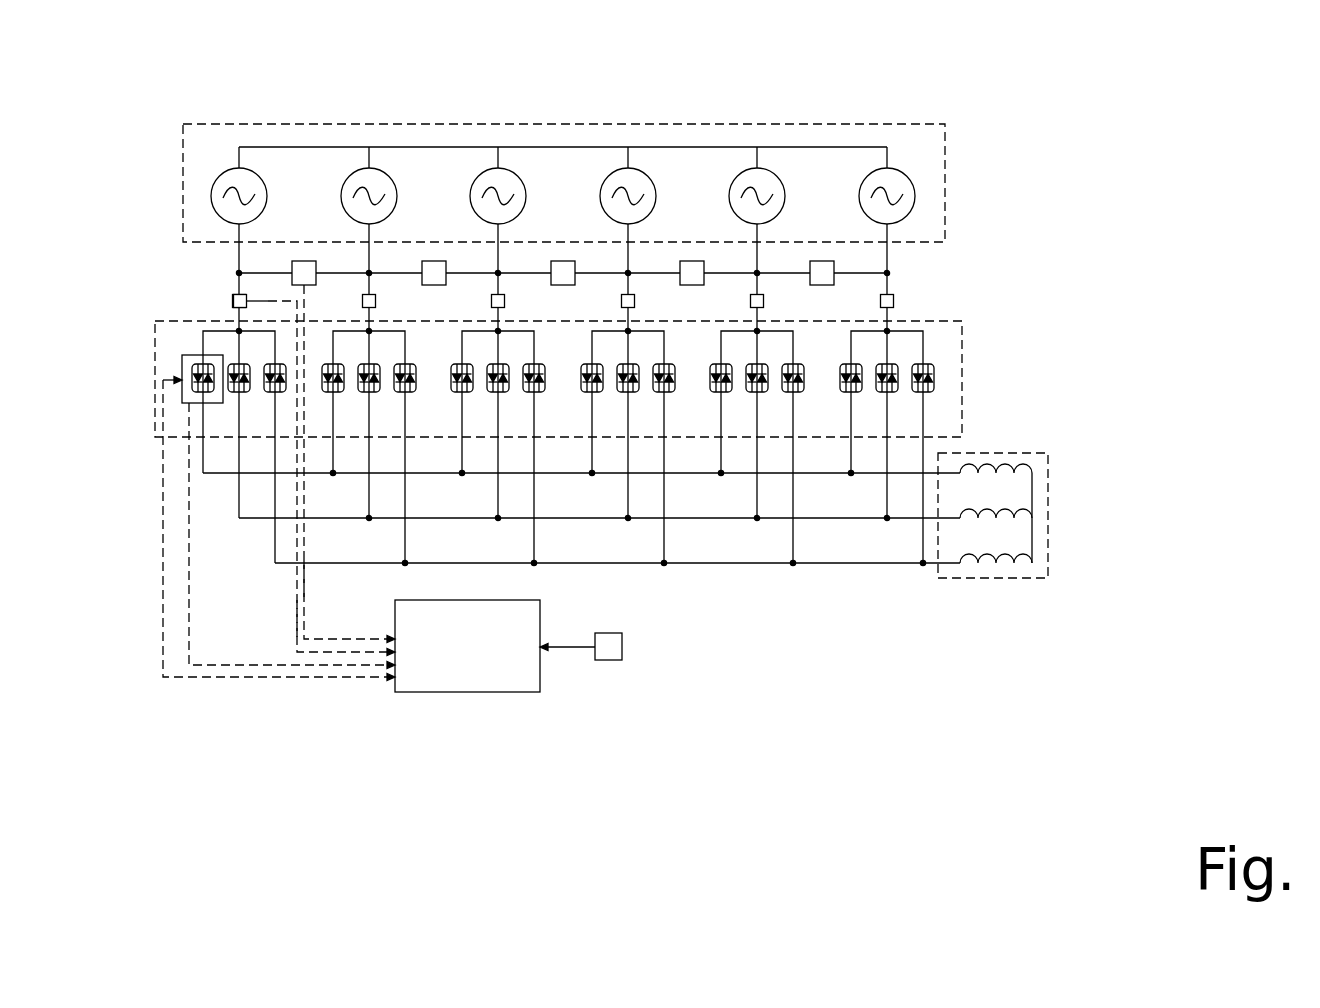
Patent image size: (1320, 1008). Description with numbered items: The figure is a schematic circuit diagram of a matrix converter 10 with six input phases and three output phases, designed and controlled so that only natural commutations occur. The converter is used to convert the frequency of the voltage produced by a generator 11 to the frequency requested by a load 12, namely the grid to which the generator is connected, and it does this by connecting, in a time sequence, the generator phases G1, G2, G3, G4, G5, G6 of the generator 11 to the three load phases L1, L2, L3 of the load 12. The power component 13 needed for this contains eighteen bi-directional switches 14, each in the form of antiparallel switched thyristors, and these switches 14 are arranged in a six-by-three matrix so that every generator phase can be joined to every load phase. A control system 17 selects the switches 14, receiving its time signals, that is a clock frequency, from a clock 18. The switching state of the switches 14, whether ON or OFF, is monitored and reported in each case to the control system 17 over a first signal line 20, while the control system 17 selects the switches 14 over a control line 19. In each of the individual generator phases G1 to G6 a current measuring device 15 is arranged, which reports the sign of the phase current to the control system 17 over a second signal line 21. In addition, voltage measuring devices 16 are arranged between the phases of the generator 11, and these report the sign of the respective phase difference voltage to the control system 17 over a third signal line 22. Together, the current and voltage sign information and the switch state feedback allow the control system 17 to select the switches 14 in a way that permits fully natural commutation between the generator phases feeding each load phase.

The matrix converter 10 is at (998, 298).
The generator 11 is at (616, 315).
The load 12 is at (658, 537).
The power component 13 is at (965, 375).
The bi-directional switch 14 is at (190, 355).
The current measuring device 15 is at (234, 298).
The voltage measuring device 16 is at (305, 270).
The control system 17 is at (487, 669).
The clock 18 is at (610, 660).
The control line 19 is at (162, 620).
The first signal line 20 is at (190, 640).
The second signal line 21 is at (297, 620).
The third signal line 22 is at (305, 575).
The generator phase G1 is at (235, 173).
The generator phase G2 is at (365, 173).
The generator phase G3 is at (494, 173).
The generator phase G4 is at (624, 173).
The generator phase G5 is at (753, 173).
The generator phase G6 is at (883, 173).
The load phase L1 is at (1012, 487).
The load phase L2 is at (1020, 535).
The load phase L3 is at (1000, 563).